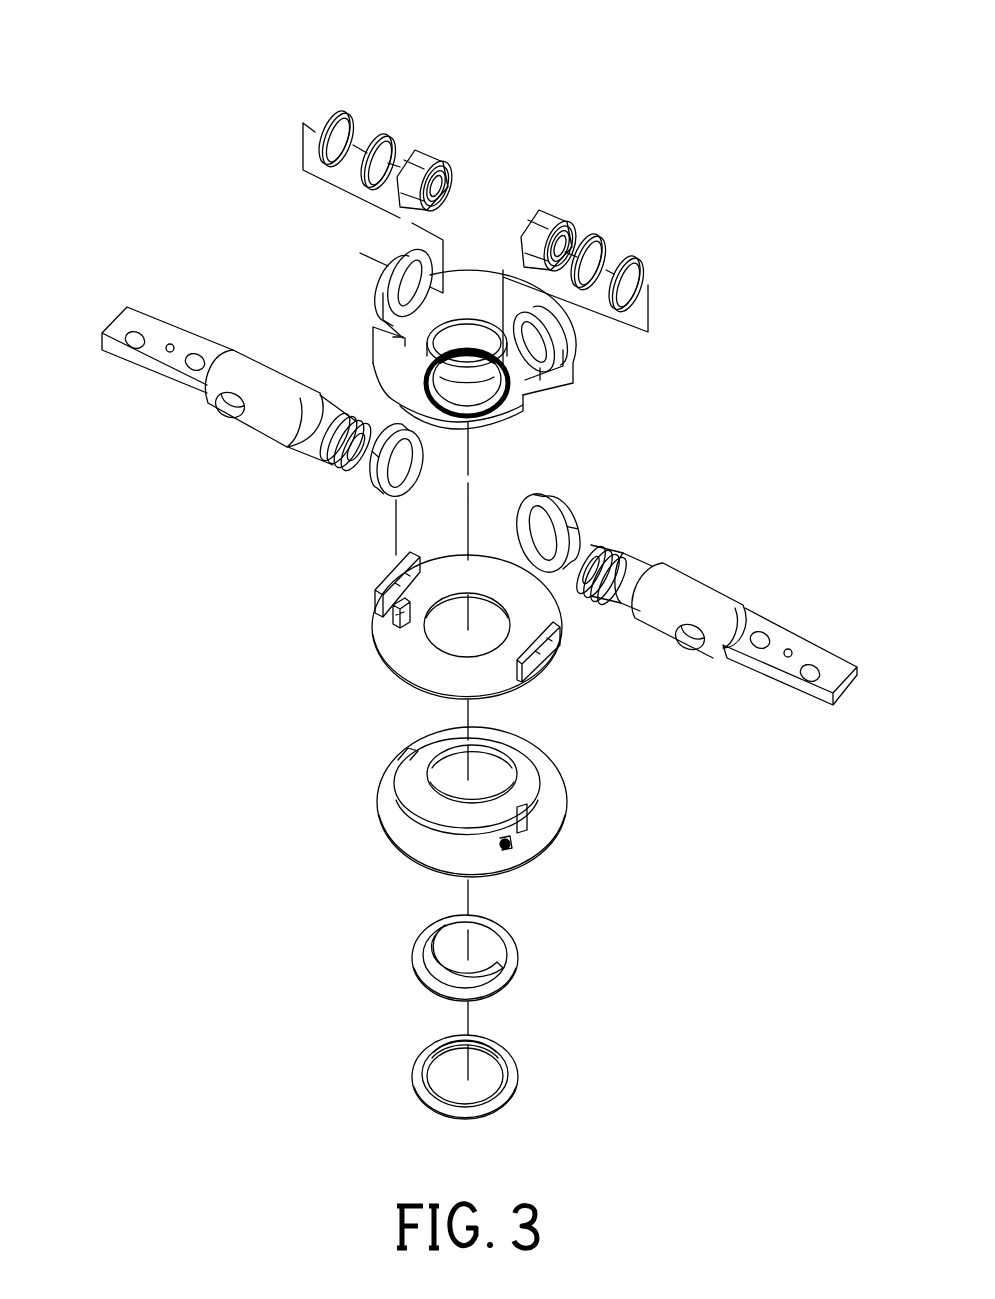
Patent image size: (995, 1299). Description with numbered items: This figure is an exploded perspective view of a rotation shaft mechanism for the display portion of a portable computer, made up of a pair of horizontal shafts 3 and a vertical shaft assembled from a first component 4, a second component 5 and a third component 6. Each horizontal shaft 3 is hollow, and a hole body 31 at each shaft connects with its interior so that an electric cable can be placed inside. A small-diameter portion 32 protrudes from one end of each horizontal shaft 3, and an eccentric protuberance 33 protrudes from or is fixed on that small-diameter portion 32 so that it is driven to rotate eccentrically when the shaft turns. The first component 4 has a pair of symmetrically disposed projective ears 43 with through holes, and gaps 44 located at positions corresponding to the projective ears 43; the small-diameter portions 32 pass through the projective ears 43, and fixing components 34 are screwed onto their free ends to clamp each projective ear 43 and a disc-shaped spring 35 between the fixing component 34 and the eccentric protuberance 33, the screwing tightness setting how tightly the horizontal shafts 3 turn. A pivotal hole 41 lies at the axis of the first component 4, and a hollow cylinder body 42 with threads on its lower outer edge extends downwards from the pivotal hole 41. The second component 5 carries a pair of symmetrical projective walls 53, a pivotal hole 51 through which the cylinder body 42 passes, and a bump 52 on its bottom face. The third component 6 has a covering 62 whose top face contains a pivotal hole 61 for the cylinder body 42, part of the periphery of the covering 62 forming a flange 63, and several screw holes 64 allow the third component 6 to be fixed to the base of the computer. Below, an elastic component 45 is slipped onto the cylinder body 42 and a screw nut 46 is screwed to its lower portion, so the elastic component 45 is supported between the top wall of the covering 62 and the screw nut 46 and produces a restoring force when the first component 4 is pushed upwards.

The horizontal shaft 3 is at (122, 328).
The hole body 31 is at (692, 648).
The small-diameter portion 32 is at (640, 570).
The eccentric protuberance 33 is at (578, 500).
The fixing component 34 is at (425, 158).
The disc-shaped spring 35 is at (344, 116).
The first component 4 is at (375, 330).
The pivotal hole 41 is at (468, 338).
The cylinder body 42 is at (425, 367).
The projective ear 43 is at (395, 278).
The gap 44 is at (542, 376).
The elastic component 45 is at (518, 958).
The screw nut 46 is at (512, 1074).
The second component 5 is at (380, 620).
The pivotal hole 51 is at (480, 605).
The bump 52 is at (398, 627).
The projective wall 53 is at (375, 598).
The third component 6 is at (378, 792).
The pivotal hole 61 is at (490, 778).
The covering 62 is at (548, 768).
The flange 63 is at (410, 752).
The screw hole 64 is at (515, 848).